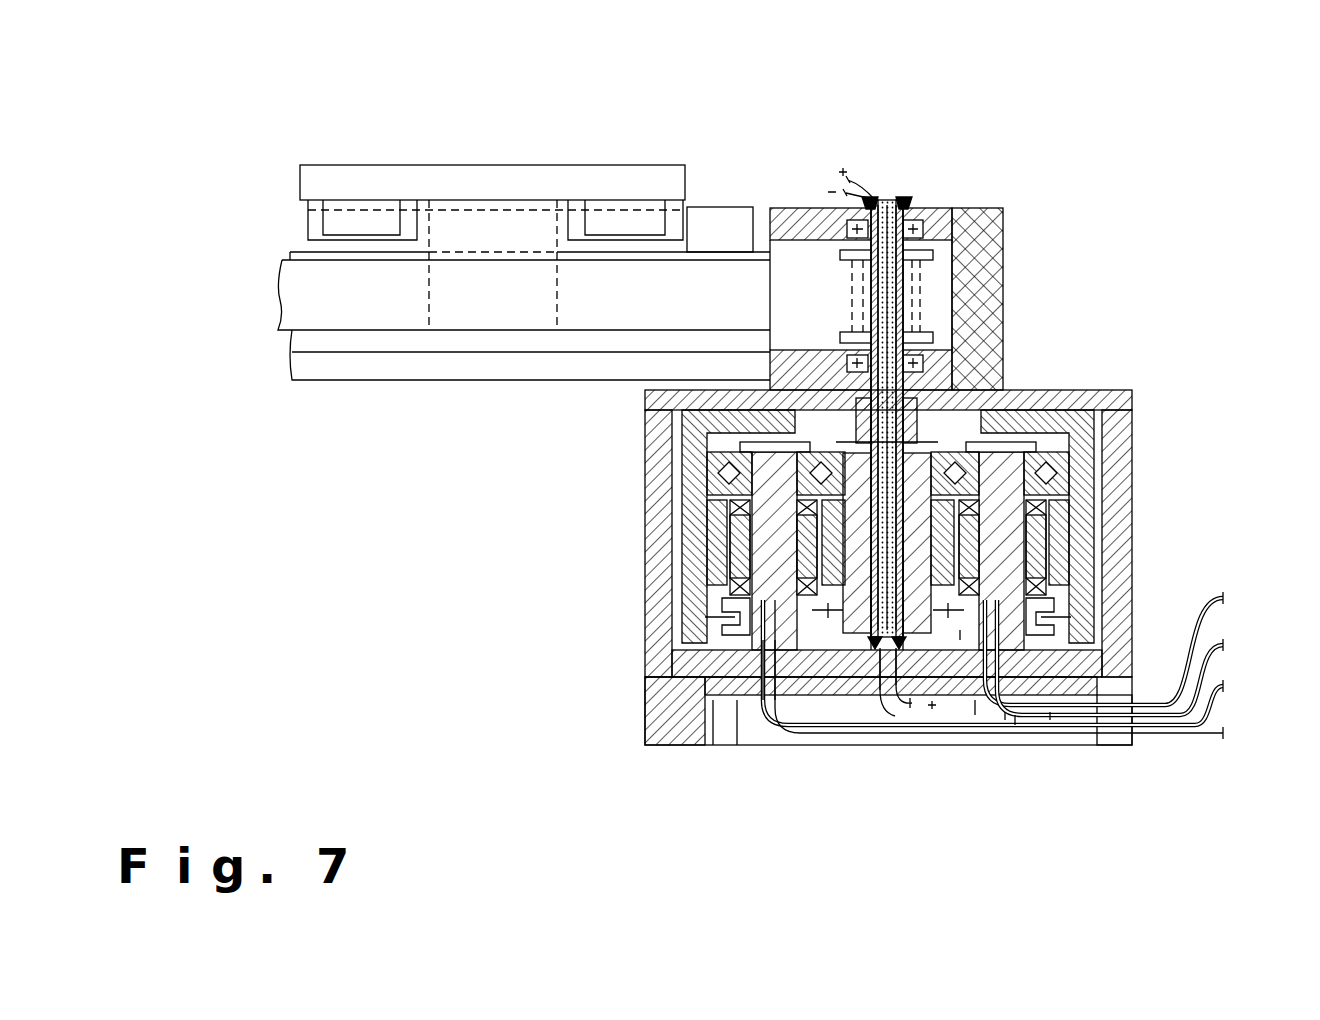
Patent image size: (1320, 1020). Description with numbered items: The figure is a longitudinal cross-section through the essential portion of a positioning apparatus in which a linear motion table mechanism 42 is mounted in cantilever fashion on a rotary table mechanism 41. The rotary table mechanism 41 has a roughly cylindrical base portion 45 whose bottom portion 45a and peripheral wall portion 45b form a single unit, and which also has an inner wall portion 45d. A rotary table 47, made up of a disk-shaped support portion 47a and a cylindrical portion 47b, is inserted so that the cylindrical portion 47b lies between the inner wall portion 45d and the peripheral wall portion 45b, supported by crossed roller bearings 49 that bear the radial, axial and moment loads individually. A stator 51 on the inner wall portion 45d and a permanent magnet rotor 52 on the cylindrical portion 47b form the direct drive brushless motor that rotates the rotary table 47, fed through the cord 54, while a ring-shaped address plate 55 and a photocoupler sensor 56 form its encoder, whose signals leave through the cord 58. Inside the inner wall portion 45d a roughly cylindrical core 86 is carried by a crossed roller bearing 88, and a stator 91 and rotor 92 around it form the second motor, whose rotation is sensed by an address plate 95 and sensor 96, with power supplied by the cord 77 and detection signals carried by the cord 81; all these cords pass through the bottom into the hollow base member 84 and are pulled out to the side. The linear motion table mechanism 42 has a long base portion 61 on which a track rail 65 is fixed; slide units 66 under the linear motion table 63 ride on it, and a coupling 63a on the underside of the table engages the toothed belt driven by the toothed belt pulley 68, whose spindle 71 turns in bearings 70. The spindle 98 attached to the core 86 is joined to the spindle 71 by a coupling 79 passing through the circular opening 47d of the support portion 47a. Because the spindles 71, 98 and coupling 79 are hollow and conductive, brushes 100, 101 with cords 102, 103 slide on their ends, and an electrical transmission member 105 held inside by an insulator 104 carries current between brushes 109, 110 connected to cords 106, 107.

The rotary table mechanism 41 is at (578, 778).
The linear motion table mechanism 42 is at (262, 148).
The base portion 45 is at (636, 653).
The bottom portion 45a is at (870, 715).
The peripheral wall portion 45b is at (1050, 505).
The inner wall portion 45d is at (1050, 720).
The rotary table 47 is at (668, 432).
The support portion 47a is at (1133, 395).
The cylindrical portion 47b is at (1100, 432).
The circular opening 47d is at (975, 330).
The crossed roller bearings 49 is at (790, 490).
The stator 51 is at (715, 603).
The rotor 52 is at (722, 585).
The cord 54 is at (1225, 686).
The address plate 55 is at (713, 748).
The sensor 56 is at (737, 748).
The cord 58 is at (1225, 733).
The base portion 61 is at (302, 388).
The linear motion table 63 is at (487, 185).
The coupling 63a is at (550, 303).
The track rail 65 is at (725, 222).
The slide units 66 is at (365, 218).
The toothed belt pulley 68 is at (860, 288).
The bearings 70 is at (910, 200).
The spindle 71 is at (905, 200).
The cord 77 is at (1225, 598).
The coupling 79 is at (960, 352).
The cord 81 is at (1225, 645).
The base member 84 is at (672, 748).
The core 86 is at (928, 372).
The crossed roller bearing 88 is at (705, 532).
The stator 91 is at (800, 720).
The rotor 92 is at (842, 748).
The address plate 95 is at (1015, 725).
The sensor 96 is at (1005, 720).
The spindle 98 is at (945, 400).
The brush 100 is at (893, 200).
The brush 101 is at (975, 715).
The cord 102 is at (883, 200).
The cord 103 is at (893, 720).
The insulator 104 is at (1045, 568).
The electrical transmission member 105 is at (1005, 262).
The cord 106 is at (867, 200).
The cord 107 is at (905, 720).
The brush 109 is at (900, 200).
The brush 110 is at (960, 635).